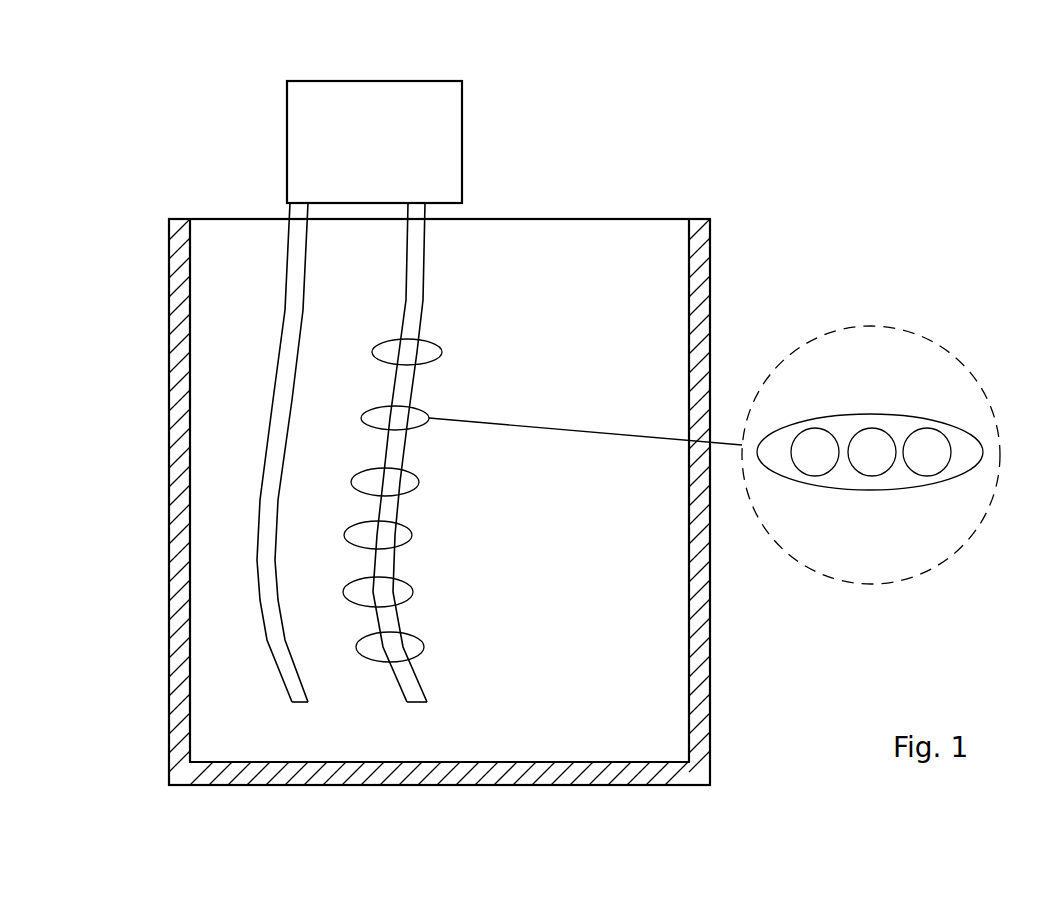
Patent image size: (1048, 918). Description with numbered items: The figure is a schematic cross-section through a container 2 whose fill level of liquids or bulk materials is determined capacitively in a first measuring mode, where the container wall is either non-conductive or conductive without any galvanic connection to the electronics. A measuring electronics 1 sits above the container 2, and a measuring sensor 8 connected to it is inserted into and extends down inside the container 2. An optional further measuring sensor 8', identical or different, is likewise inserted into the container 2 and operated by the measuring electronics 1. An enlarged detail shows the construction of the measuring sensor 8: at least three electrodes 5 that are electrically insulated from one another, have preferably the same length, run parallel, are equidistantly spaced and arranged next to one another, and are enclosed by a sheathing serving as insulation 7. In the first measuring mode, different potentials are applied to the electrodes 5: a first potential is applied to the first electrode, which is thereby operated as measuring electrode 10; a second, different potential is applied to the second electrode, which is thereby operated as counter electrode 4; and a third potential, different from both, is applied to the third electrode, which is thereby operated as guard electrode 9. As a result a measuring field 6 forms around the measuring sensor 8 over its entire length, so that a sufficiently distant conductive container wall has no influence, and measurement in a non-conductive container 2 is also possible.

The measuring electronics 1 is at (479, 101).
The container 2 is at (724, 236).
The counter electrode 4 is at (960, 434).
The electrode 5 is at (870, 452).
The measuring field 6 is at (396, 500).
The insulation 7 is at (847, 406).
The measuring sensor 8 is at (474, 416).
The further measuring sensor 8' is at (261, 452).
The guard electrode 9 is at (885, 489).
The measuring electrode 10 is at (816, 490).